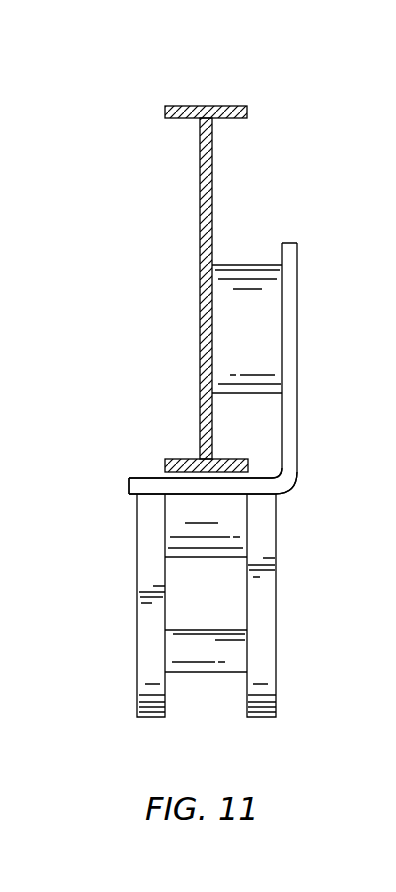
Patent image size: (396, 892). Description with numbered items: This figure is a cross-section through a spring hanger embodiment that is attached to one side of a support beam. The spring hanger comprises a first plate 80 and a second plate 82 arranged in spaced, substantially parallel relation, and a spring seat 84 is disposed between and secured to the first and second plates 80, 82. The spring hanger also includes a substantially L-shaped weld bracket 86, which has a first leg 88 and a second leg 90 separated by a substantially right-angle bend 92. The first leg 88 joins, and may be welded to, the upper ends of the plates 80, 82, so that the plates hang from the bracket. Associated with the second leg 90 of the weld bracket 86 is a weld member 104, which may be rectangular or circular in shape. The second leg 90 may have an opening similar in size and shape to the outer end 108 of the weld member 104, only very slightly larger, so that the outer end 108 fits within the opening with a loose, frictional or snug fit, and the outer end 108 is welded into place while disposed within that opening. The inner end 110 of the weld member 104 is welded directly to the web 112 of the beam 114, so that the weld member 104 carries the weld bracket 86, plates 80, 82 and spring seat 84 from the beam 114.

The first plate 80 is at (145, 622).
The second plate 82 is at (280, 618).
The spring seat 84 is at (187, 507).
The weld bracket 86 is at (297, 428).
The first leg 88 is at (145, 485).
The second leg 90 is at (290, 323).
The right-angle bend 92 is at (285, 485).
The weld member 104 is at (237, 335).
The outer end 108 is at (282, 265).
The inner end 110 is at (212, 263).
The web 112 is at (200, 172).
The beam 114 is at (188, 103).